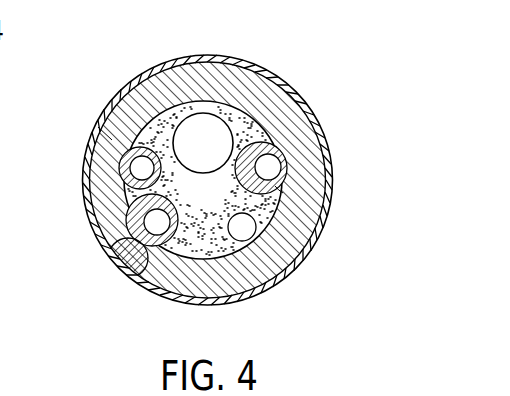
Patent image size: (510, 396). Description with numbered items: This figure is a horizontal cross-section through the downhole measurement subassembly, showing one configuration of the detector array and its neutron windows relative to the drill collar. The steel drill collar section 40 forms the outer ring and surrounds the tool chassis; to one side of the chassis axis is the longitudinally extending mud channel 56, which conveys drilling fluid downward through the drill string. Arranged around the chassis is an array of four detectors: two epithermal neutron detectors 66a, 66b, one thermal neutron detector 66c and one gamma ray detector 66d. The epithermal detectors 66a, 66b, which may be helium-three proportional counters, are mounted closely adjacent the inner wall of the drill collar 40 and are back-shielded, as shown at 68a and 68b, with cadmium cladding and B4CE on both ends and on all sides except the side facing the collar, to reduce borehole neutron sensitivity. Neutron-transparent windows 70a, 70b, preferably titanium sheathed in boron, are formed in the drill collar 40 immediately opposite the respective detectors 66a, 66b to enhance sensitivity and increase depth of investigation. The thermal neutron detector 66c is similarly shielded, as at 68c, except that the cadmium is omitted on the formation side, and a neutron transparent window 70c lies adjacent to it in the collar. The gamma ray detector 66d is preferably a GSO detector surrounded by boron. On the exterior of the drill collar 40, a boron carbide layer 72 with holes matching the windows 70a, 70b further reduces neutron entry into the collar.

The drill collar section 40 is at (130, 90).
The mud channel 56 is at (218, 122).
The epithermal neutron detector 66a is at (151, 219).
The epithermal neutron detector 66b is at (283, 193).
The thermal neutron detector 66c is at (98, 127).
The gamma ray detector 66d is at (112, 103).
The back shielding 68a is at (178, 238).
The back shielding 68b is at (244, 228).
The shielding 68c is at (137, 166).
The neutron-transparent window 70a is at (110, 264).
The neutron-transparent window 70b is at (338, 148).
The neutron transparent window 70c is at (105, 163).
The boron carbide layer 72 is at (273, 173).